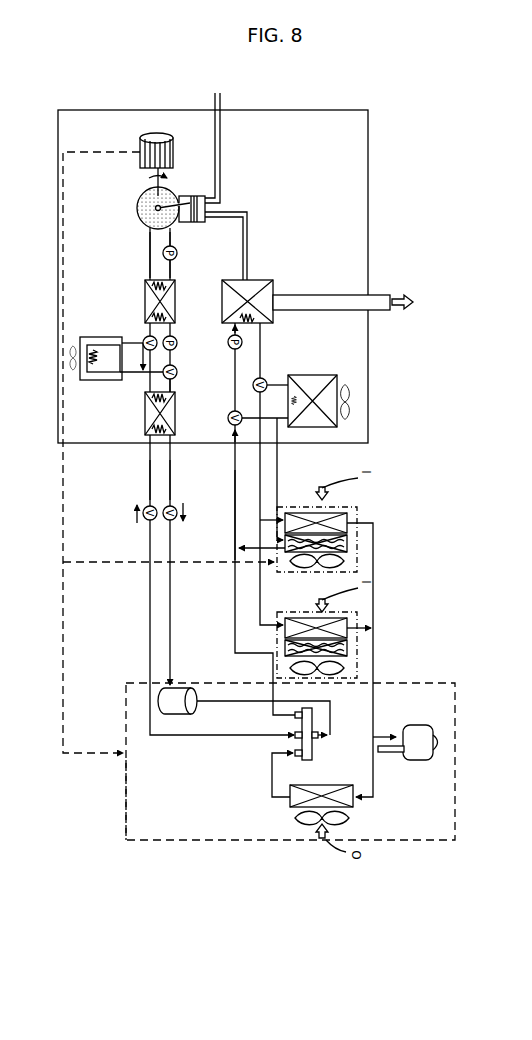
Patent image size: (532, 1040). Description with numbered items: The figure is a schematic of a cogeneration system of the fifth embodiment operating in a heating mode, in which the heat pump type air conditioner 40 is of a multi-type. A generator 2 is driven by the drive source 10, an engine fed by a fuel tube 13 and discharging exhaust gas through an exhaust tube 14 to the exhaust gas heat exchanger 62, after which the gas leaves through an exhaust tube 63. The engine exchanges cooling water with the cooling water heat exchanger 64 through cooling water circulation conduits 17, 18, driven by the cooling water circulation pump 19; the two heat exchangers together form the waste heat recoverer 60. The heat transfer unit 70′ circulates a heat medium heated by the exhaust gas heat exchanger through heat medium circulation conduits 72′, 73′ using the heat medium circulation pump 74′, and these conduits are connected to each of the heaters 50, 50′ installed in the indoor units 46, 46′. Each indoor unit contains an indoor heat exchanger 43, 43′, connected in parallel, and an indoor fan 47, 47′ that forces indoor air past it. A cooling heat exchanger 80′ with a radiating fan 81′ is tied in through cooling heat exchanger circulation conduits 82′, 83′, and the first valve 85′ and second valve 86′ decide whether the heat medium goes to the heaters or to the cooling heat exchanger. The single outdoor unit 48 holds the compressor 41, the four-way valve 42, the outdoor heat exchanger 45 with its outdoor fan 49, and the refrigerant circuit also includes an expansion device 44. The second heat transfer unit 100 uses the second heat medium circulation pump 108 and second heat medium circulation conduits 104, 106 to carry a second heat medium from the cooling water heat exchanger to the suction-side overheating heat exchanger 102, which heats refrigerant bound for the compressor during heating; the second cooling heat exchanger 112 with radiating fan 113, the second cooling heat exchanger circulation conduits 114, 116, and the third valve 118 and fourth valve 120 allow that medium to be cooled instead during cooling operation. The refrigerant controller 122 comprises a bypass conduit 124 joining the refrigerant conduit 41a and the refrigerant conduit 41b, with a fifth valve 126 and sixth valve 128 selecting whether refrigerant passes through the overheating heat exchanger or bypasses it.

The generator 2 is at (174, 150).
The drive source 10 is at (138, 206).
The fuel tube 13 is at (221, 150).
The exhaust tube 14 is at (249, 250).
The cooling water circulation conduit 17 is at (145, 286).
The cooling water circulation conduit 18 is at (149, 250).
The cooling water circulation pump 19 is at (178, 255).
The waste heat recoverer 60 is at (323, 252).
The exhaust gas heat exchanger 62 is at (276, 318).
The exhaust tube 63 is at (345, 294).
The cooling water heat exchanger 64 is at (144, 296).
The second heat transfer unit 100 is at (138, 440).
The suction-side overheating heat exchanger 102 is at (147, 425).
The second heat medium circulation conduit 104 is at (131, 373).
The second heat medium circulation conduit 106 is at (173, 386).
The second heat medium circulation pump 108 is at (174, 337).
The second cooling heat exchanger 112 is at (82, 380).
The radiating fan 113 is at (70, 347).
The second cooling heat exchanger circulation conduit 114 is at (134, 343).
The second cooling heat exchanger circulation conduit 116 is at (96, 373).
The third valve 118 is at (147, 336).
The fourth valve 120 is at (177, 370).
The refrigerant controller 122 is at (138, 537).
The bypass conduit 124 is at (152, 521).
The fifth valve 126 is at (143, 515).
The sixth valve 128 is at (174, 520).
The compressor 41 is at (180, 716).
The refrigerant conduit 41a is at (148, 488).
The refrigerant conduit 41b is at (172, 478).
The 4-way valve 42 is at (318, 748).
The indoor heat exchanger 43 is at (358, 612).
The indoor heat exchanger 43′ is at (358, 507).
The expansion device 44 is at (441, 745).
The outdoor heat exchanger 45 is at (355, 800).
The indoor unit 46 is at (363, 615).
The indoor unit 46′ is at (363, 510).
The indoor fan 47 is at (345, 668).
The indoor fan 47′ is at (345, 560).
The outdoor unit 48 is at (119, 798).
The outdoor fan 49 is at (295, 818).
The heater 50 is at (348, 650).
The heater 50′ is at (348, 545).
The heat pump type air conditioner 40 is at (442, 671).
The heat transfer unit 70′ is at (313, 460).
The heat medium circulation conduit 72′ is at (258, 470).
The heat medium circulation conduit 73′ is at (233, 505).
The heat medium circulation pump 74′ is at (228, 342).
The cooling heat exchanger 80′ is at (338, 382).
The radiating fan 81′ is at (352, 410).
The cooling heat exchanger circulation conduit 82′ is at (281, 385).
The cooling heat exchanger circulation conduit 83′ is at (278, 450).
The first valve 85′ is at (264, 378).
The second valve 86′ is at (228, 418).